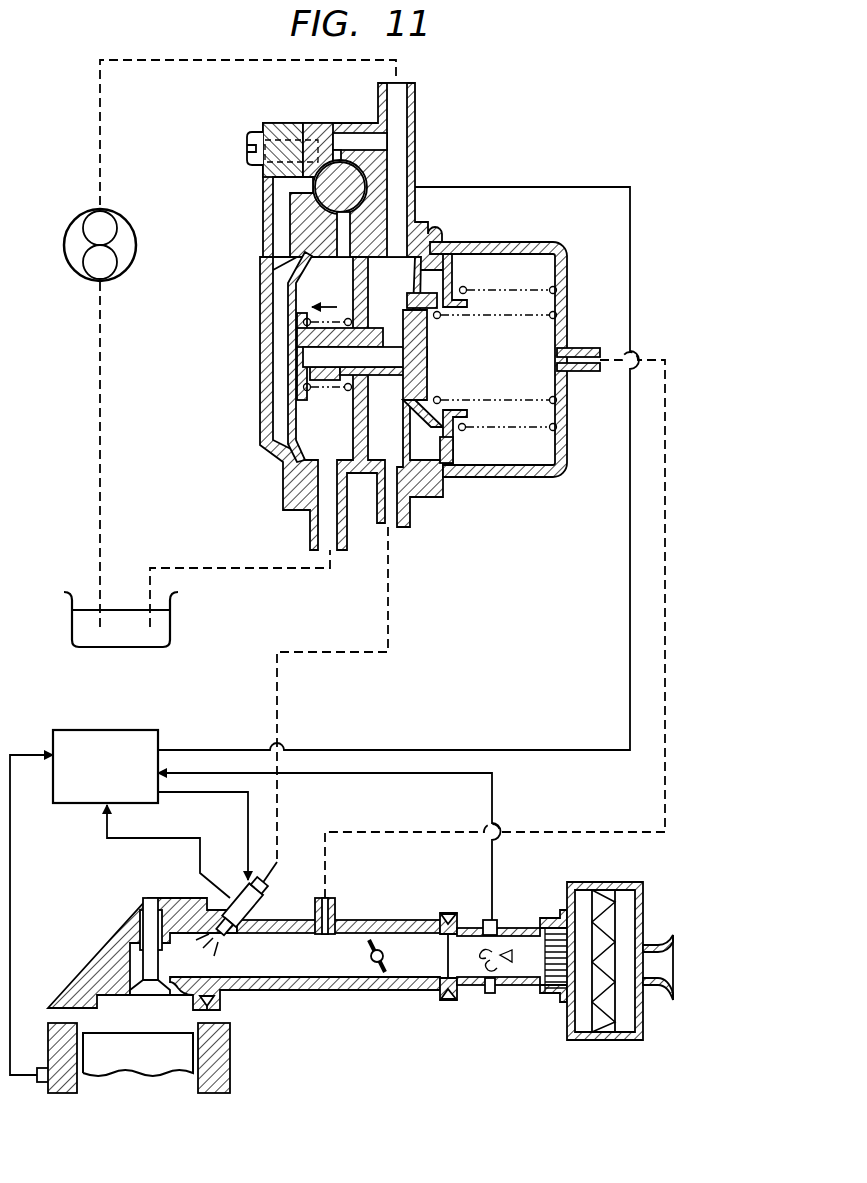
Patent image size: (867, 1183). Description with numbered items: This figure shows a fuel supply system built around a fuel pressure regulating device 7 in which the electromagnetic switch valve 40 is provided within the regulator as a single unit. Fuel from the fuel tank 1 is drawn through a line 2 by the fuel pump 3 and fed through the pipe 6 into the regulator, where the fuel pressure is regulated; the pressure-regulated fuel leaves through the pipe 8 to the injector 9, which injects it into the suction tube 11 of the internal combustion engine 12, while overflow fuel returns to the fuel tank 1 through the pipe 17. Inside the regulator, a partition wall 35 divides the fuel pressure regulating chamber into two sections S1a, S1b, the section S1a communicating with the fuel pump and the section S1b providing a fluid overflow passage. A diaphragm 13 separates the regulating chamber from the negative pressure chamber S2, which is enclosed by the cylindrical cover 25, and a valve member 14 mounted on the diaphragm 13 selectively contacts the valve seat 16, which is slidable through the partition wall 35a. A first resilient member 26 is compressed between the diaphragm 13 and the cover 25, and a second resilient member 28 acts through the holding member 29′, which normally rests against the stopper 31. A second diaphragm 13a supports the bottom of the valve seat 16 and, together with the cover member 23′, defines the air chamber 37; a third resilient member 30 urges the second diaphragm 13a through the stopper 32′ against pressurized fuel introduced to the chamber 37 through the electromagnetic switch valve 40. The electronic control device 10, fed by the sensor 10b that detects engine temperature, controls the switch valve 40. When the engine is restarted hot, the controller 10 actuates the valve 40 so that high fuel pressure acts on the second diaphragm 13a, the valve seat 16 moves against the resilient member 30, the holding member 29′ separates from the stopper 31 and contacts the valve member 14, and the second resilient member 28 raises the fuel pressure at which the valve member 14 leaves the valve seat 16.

The fuel tank 1 is at (72, 622).
The fuel line 2 is at (97, 370).
The fuel pump 3 is at (64, 246).
The pipe 6 is at (98, 95).
The fuel pressure regulating device 7 is at (415, 324).
The pipe 8 is at (279, 700).
The injector 9 is at (261, 907).
The electronic control device 10 is at (114, 730).
The sensor 10b is at (238, 894).
The suction tube 11 is at (293, 960).
The internal combustion engine 12 is at (100, 968).
The diaphragm 13 is at (411, 290).
The second diaphragm 13a is at (301, 292).
The valve member 14 is at (405, 328).
The valve seat 16 is at (398, 458).
The pipe 17 is at (247, 570).
The cover member 23′ is at (260, 442).
The cylindrical cover 25 is at (569, 262).
The first resilient member 26 is at (538, 397).
The second resilient member 28 is at (544, 430).
The holding member 29′ is at (459, 435).
The third resilient member 30 is at (313, 390).
The stopper 31 is at (452, 468).
The stopper 32′ is at (280, 330).
The partition wall 35 is at (355, 474).
The partition wall 35a is at (318, 525).
The air chamber 37 is at (278, 305).
The electromagnetic switch valve 40 is at (358, 177).
The section of fuel pressure regulating chamber S1a is at (402, 528).
The section of fuel pressure regulating chamber S1b is at (285, 466).
The negative pressure chamber S2 is at (550, 326).